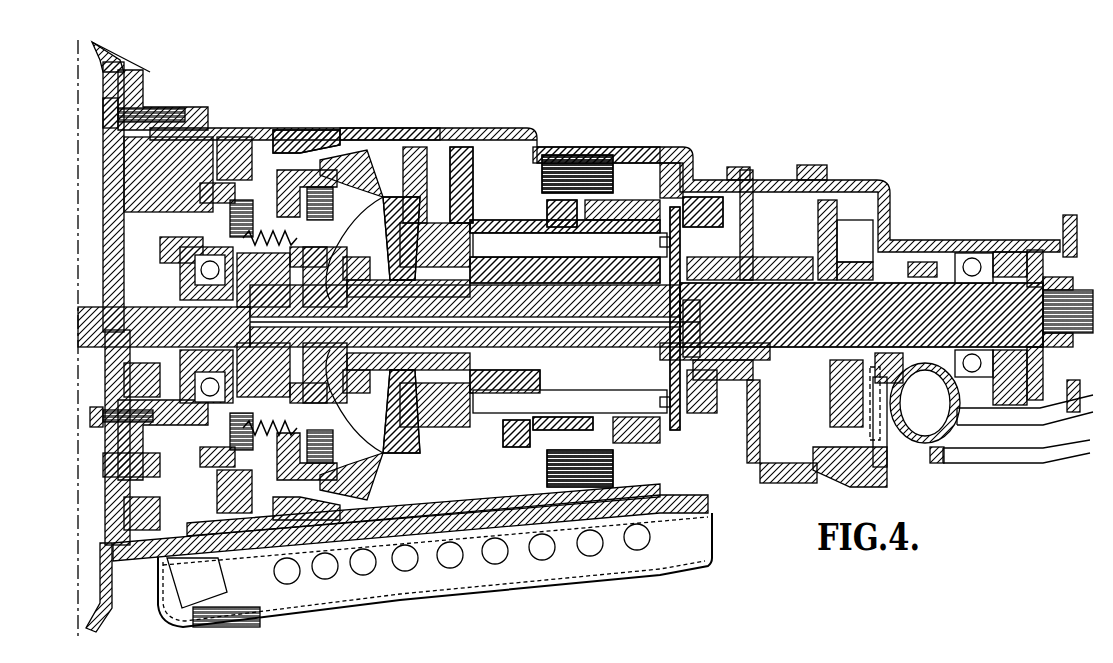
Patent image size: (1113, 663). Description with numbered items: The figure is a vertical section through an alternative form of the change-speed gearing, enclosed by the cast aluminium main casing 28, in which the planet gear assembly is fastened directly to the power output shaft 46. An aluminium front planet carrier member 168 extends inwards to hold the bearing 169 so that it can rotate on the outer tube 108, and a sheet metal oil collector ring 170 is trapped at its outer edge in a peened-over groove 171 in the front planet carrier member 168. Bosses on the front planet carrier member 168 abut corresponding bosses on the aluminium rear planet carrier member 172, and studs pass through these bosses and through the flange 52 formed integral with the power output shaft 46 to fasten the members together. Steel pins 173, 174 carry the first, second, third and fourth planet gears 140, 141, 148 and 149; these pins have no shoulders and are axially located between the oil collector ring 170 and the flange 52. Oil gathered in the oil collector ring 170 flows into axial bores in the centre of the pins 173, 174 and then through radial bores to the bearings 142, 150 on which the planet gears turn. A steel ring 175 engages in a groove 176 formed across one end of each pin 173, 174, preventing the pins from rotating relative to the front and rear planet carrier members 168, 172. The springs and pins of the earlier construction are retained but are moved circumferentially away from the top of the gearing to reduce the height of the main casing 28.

The bearing 169 is at (318, 136).
The main casing 28 is at (351, 132).
The oil collector ring 170 is at (448, 235).
The peened-over groove 171 is at (470, 226).
The front planet carrier member 168 is at (523, 197).
The third planet gear 148 is at (593, 155).
The fourth planet gear 149 is at (603, 205).
The rear planet carrier member 172 is at (678, 175).
The steel ring 175 is at (676, 232).
The flange 52 is at (690, 243).
The power output shaft 46 is at (765, 307).
The steel pin 174 is at (513, 254).
The bearings 150 is at (565, 256).
The groove 176 is at (662, 242).
The steel pin 173 is at (514, 413).
The bearings 142 is at (583, 413).
The outer tube 108 is at (472, 358).
The first planet gear 140 is at (517, 445).
The second planet gear 141 is at (568, 485).